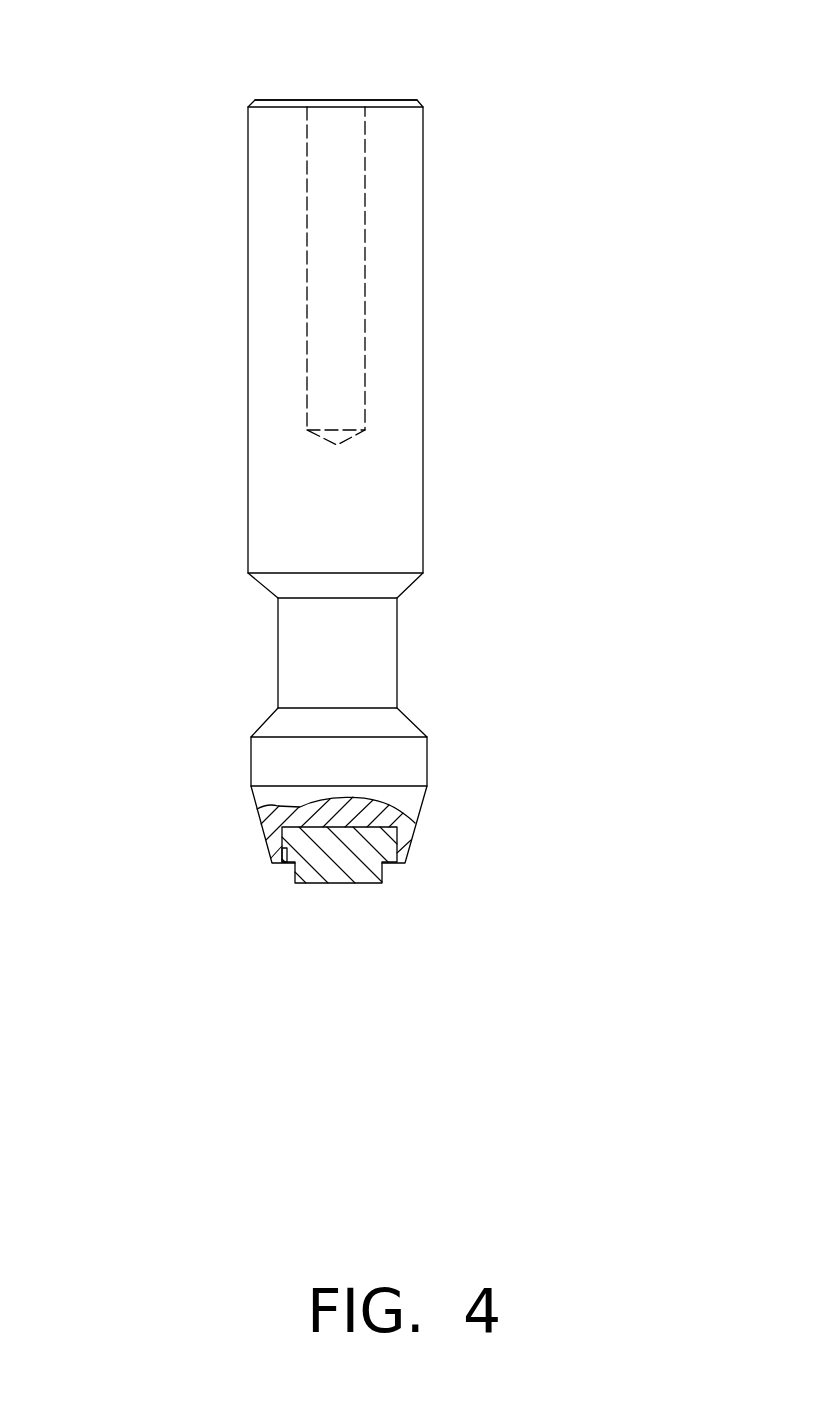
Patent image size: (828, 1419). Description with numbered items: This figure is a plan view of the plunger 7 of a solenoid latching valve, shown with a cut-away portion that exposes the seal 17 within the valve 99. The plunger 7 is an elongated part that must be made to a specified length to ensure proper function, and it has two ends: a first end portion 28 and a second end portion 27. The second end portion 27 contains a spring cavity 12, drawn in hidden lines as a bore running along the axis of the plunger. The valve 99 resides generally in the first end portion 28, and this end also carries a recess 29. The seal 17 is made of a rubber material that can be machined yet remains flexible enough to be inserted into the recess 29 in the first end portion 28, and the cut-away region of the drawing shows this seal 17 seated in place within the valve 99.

The plunger 7 is at (532, 459).
The second end portion 27 is at (368, 100).
The spring cavity 12 is at (365, 308).
The first end portion 28 is at (273, 762).
The valve 99 is at (462, 836).
The seal 17 is at (333, 868).
The recess 29 is at (283, 868).